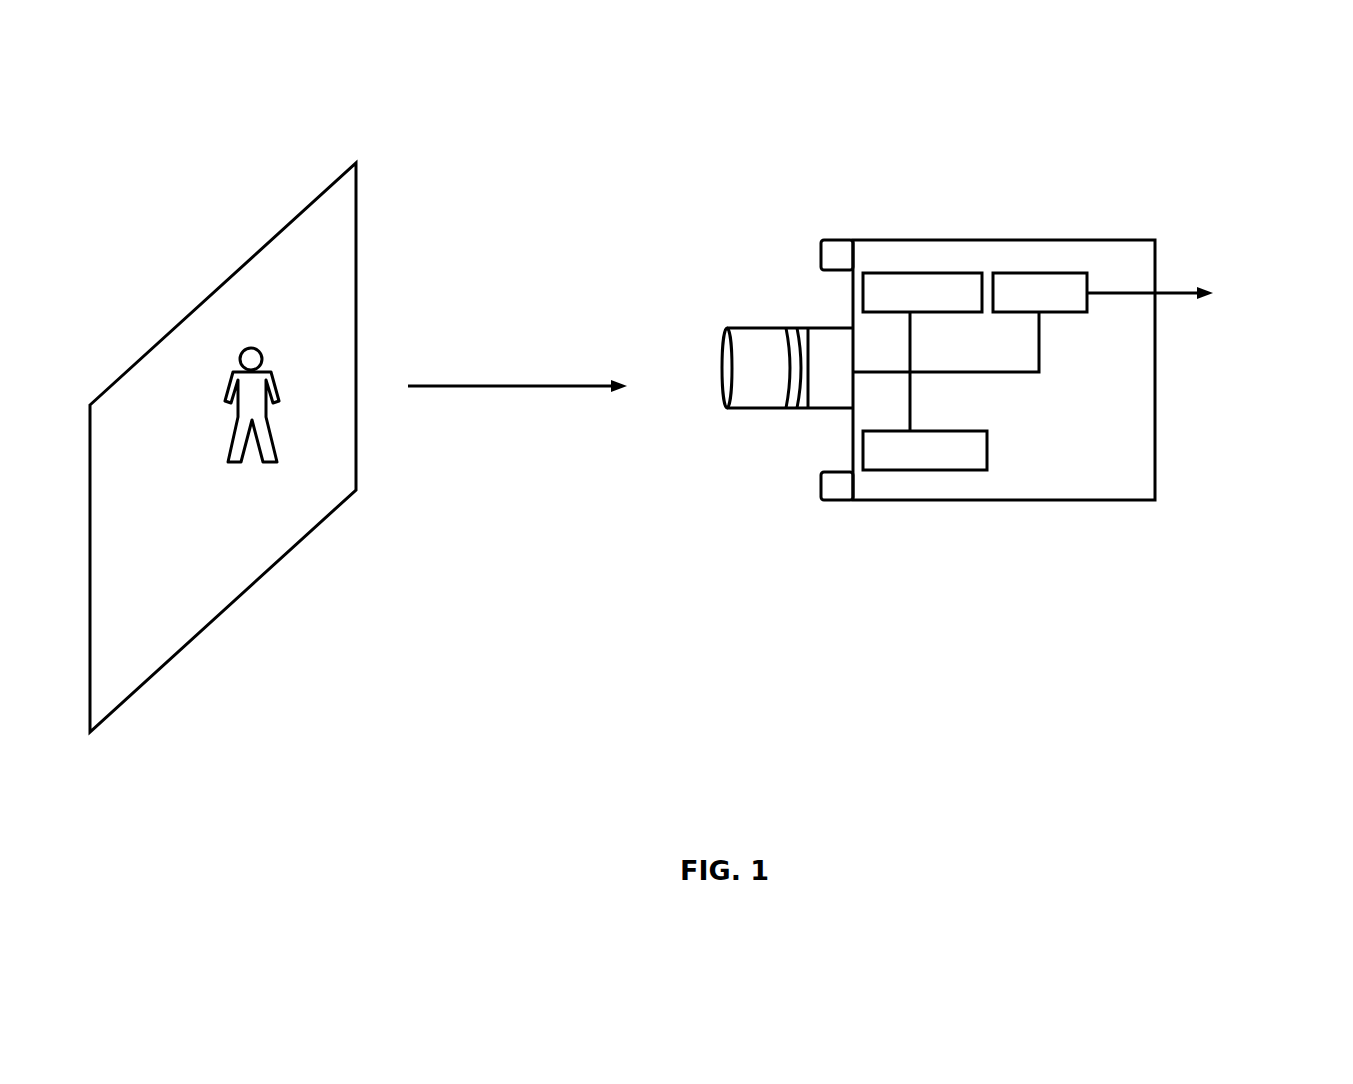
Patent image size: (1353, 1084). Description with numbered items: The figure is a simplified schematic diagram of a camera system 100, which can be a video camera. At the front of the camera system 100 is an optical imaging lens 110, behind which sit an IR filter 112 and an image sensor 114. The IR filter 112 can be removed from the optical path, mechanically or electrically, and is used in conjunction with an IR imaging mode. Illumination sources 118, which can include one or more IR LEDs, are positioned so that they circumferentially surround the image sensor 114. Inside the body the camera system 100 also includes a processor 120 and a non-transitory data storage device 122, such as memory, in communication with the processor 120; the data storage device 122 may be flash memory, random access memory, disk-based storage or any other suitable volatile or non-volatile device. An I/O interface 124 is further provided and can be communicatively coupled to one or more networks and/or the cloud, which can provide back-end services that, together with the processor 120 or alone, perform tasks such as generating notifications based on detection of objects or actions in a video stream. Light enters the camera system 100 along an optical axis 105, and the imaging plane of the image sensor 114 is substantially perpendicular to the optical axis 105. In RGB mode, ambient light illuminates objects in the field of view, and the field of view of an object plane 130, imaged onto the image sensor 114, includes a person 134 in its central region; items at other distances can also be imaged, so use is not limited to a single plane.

The camera system 100 is at (912, 505).
The optical axis 105 is at (517, 374).
The optical imaging lens 110 is at (760, 327).
The IR filter 112 is at (792, 410).
The image sensor 114 is at (840, 410).
The illumination sources 118 is at (835, 240).
The processor 120 is at (928, 273).
The non-transitory data storage device 122 is at (927, 470).
The I/O interface 124 is at (1058, 273).
The object plane 130 is at (288, 223).
The person 134 is at (204, 414).